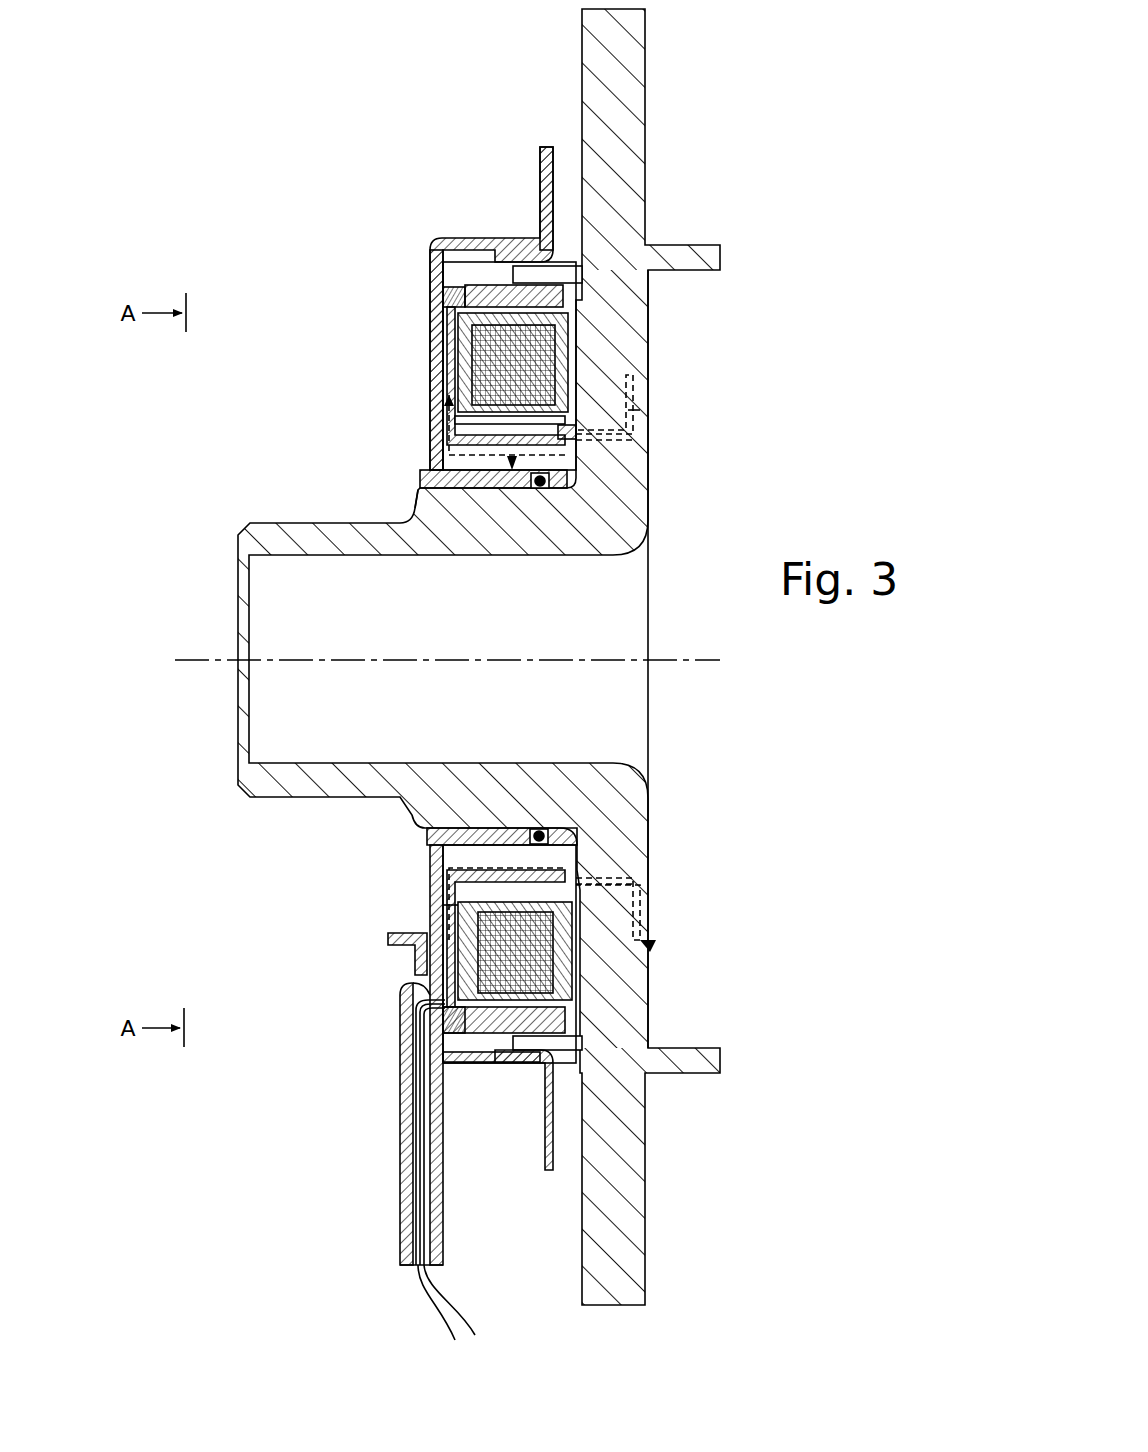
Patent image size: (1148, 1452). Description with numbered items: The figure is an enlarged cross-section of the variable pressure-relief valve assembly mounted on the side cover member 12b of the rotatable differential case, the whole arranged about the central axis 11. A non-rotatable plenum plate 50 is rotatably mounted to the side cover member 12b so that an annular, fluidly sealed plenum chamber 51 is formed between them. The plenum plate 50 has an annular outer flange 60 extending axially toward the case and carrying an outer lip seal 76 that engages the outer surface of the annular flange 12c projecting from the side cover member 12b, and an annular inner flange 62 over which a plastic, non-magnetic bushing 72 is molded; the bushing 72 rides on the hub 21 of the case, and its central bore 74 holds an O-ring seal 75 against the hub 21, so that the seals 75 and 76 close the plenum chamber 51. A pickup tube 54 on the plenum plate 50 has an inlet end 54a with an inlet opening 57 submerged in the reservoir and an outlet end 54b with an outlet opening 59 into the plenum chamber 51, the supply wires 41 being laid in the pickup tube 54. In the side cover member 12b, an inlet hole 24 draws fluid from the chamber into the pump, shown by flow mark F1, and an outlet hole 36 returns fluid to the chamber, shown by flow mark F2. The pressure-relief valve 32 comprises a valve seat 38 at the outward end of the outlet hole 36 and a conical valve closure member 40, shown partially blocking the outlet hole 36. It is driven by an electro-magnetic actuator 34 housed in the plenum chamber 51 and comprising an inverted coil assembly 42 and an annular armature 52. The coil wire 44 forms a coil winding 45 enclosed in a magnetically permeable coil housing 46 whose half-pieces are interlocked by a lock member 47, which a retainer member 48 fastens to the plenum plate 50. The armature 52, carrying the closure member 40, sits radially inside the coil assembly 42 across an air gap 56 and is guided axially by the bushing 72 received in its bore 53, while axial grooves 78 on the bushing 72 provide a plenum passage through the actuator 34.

The central axis 11 is at (216, 660).
The side cover member 12b is at (485, 657).
The annular flange 12c is at (580, 275).
The hub 21 is at (315, 785).
The inlet hole 24 is at (600, 870).
The pressure-relief valve 32 is at (615, 508).
The electro-magnetic actuator 34 is at (450, 904).
The outlet hole 36 is at (590, 440).
The valve seat 38 is at (605, 395).
The valve closure member 40 is at (565, 463).
The supply wires 41 is at (440, 1312).
The electro-magnetic coil assembly 42 is at (578, 965).
The coil wire 44 is at (515, 910).
The coil winding 45 is at (572, 355).
The coil housing 46 is at (568, 300).
The lock member 47 is at (478, 1055).
The retainer member 48 is at (435, 268).
The plenum plate 50 is at (515, 315).
The plenum chamber 51 is at (445, 335).
The armature 52 is at (492, 480).
The bore 53 is at (560, 495).
The pickup tube 54 is at (433, 1084).
The inlet end 54a is at (400, 1225).
The outlet end 54b is at (400, 978).
The air gap 56 is at (447, 410).
The inlet opening 57 is at (410, 1270).
The outlet opening 59 is at (415, 1025).
The outer flange 60 is at (480, 240).
The inner flange 62 is at (440, 830).
The bushing 72 is at (430, 480).
The central bore 74 is at (445, 525).
The O-ring seal 75 is at (541, 490).
The outer lip seal 76 is at (540, 238).
The axial grooves 78 is at (555, 835).
The inlet fluid flow F1 is at (430, 870).
The outlet fluid flow F2 is at (650, 410).